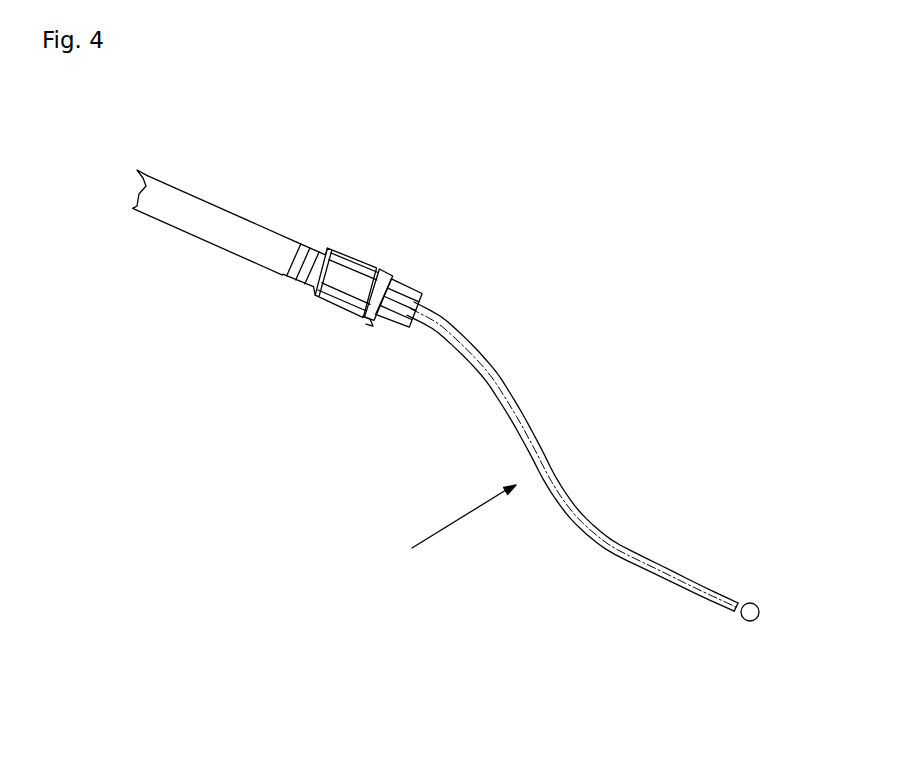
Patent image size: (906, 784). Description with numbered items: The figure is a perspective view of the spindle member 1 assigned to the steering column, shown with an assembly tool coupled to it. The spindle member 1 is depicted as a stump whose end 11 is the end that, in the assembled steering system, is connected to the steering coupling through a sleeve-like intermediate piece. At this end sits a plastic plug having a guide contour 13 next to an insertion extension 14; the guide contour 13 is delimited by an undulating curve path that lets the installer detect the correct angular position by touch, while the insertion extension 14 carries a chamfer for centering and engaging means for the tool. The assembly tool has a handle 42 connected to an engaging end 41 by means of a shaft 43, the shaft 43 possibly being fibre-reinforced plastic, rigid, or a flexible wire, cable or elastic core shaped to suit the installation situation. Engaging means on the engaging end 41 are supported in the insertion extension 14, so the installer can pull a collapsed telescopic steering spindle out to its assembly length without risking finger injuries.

The spindle member 1 is at (205, 196).
The end 11 is at (370, 205).
The guide contour 13 is at (392, 272).
The insertion extension 14 is at (386, 320).
The engaging end 41 is at (405, 318).
The handle 42 is at (752, 622).
The shaft 43 is at (580, 503).